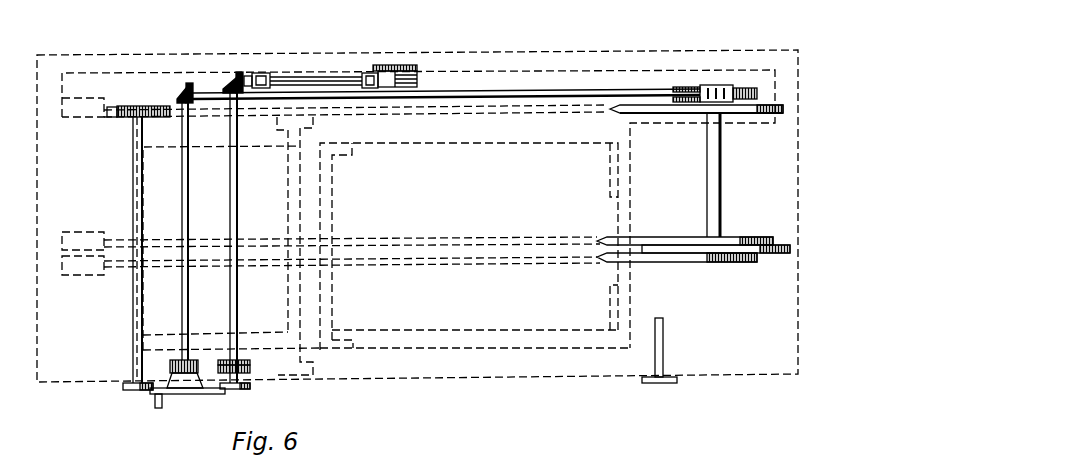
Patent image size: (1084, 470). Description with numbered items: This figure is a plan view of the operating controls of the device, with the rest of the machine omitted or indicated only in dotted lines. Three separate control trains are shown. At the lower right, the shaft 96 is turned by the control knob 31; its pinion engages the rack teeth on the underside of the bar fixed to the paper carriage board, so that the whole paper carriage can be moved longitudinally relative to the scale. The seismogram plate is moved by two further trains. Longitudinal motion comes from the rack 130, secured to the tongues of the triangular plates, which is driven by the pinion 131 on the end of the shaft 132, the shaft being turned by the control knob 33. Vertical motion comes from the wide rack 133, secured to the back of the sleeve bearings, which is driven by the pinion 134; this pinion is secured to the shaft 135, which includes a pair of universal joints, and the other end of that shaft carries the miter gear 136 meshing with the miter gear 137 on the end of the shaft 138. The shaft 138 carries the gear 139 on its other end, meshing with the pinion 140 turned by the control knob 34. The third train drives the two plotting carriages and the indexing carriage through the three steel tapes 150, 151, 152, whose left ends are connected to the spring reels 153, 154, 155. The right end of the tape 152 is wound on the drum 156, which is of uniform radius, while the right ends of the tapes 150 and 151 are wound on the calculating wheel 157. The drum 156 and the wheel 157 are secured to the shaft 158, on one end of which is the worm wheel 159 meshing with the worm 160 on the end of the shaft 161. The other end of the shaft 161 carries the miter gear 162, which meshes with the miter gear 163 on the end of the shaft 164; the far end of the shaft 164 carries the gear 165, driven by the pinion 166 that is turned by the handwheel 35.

The control knob 31 is at (652, 384).
The control knob 33 is at (132, 389).
The control knob 34 is at (238, 389).
The handwheel 35 is at (186, 396).
The shaft 96 is at (664, 344).
The rack 130 is at (112, 106).
The pinion 131 is at (141, 106).
The shaft 132 is at (143, 184).
The wide rack 133 is at (412, 68).
The pinion 134 is at (393, 75).
The shaft 135 is at (309, 78).
The miter gear 136 is at (242, 74).
The miter gear 137 is at (227, 91).
The shaft 138 is at (238, 202).
The gear 139 is at (250, 370).
The pinion 140 is at (252, 362).
The steel tape 150 is at (436, 262).
The steel tape 151 is at (437, 238).
The steel tape 152 is at (438, 113).
The spring reel 153 is at (83, 265).
The spring reel 154 is at (83, 241).
The spring reel 155 is at (83, 107).
The drum 156 is at (748, 113).
The calculating wheel 157 is at (782, 253).
The shaft 158 is at (722, 163).
The worm wheel 159 is at (745, 88).
The worm 160 is at (715, 86).
The shaft 161 is at (540, 92).
The miter gear 162 is at (192, 84).
The miter gear 163 is at (179, 100).
The shaft 164 is at (188, 194).
The gear 165 is at (177, 383).
The pinion 166 is at (193, 380).